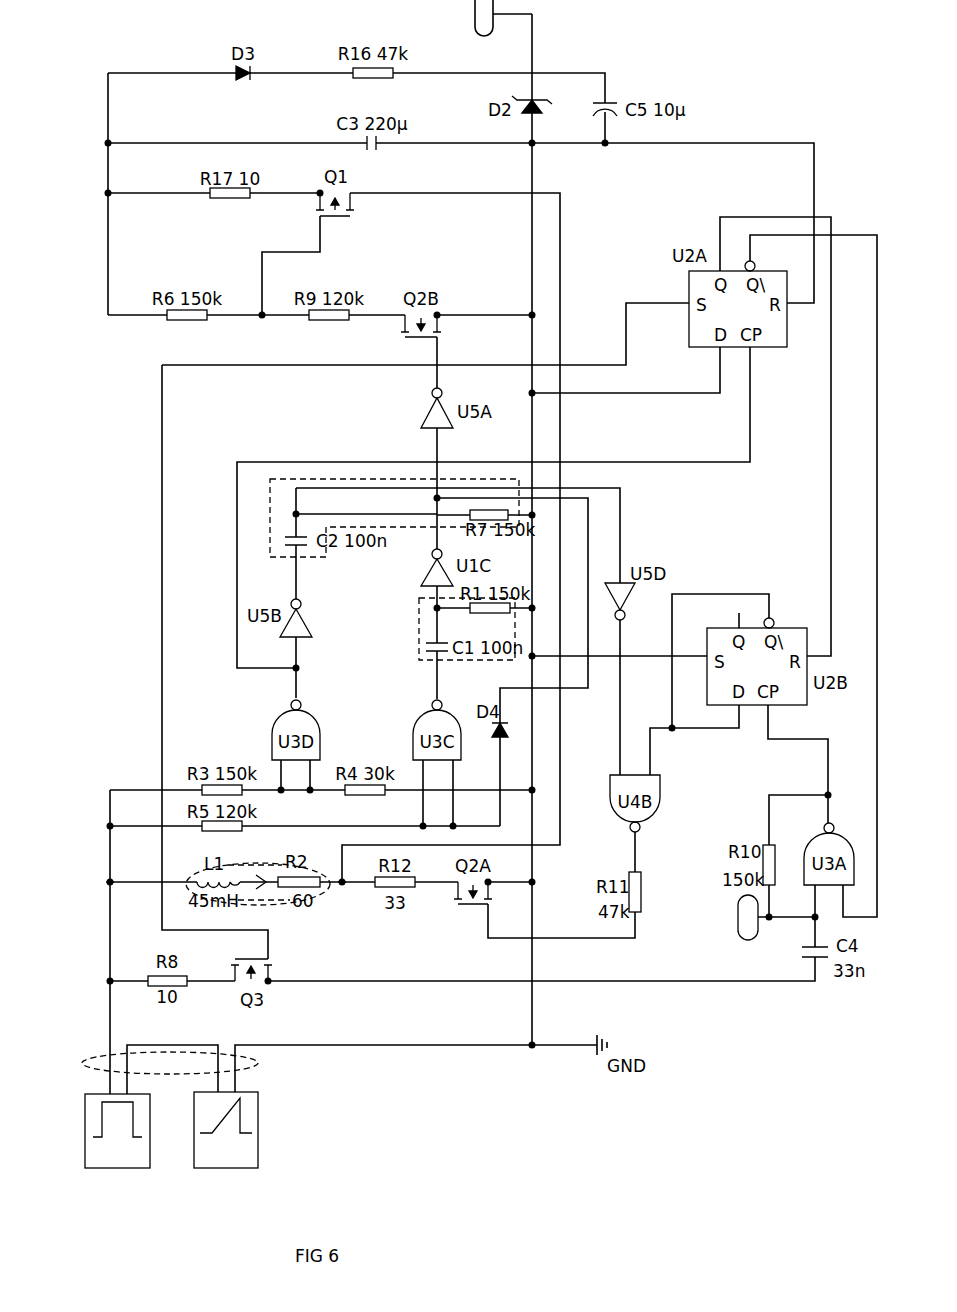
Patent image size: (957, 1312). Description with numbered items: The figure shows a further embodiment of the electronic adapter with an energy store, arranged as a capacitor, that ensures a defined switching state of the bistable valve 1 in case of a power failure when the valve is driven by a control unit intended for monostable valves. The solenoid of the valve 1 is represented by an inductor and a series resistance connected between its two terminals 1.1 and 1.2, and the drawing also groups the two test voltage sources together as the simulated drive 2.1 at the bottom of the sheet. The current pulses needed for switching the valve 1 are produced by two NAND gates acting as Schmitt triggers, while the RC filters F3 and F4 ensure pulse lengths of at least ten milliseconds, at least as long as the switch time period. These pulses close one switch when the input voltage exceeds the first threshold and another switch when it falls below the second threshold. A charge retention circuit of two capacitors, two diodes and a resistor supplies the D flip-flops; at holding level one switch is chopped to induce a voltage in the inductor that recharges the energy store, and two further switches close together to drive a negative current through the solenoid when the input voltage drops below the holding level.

The bistable valve 1 is at (318, 893).
The first terminal of load 1.1 is at (345, 888).
The second terminal of load 1.2 is at (107, 880).
The voltage sources V1, V2 2.1 is at (258, 1065).
The RC filter F3 is at (289, 479).
The RC filter F4 is at (419, 620).